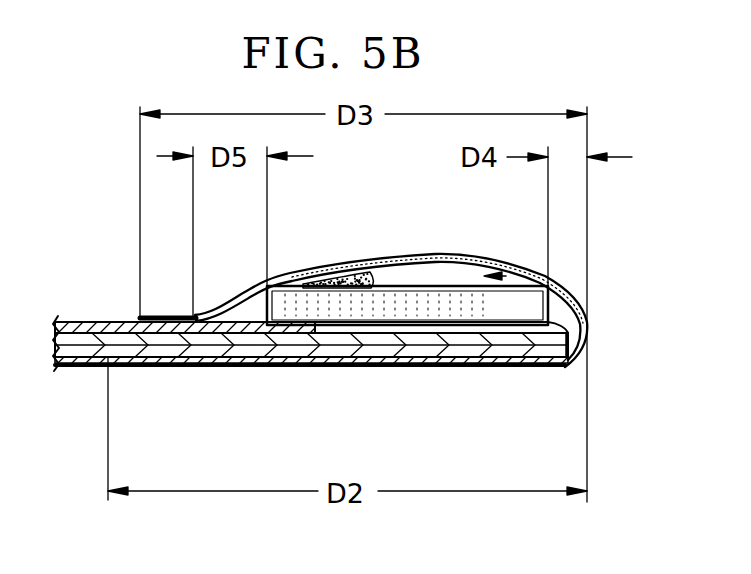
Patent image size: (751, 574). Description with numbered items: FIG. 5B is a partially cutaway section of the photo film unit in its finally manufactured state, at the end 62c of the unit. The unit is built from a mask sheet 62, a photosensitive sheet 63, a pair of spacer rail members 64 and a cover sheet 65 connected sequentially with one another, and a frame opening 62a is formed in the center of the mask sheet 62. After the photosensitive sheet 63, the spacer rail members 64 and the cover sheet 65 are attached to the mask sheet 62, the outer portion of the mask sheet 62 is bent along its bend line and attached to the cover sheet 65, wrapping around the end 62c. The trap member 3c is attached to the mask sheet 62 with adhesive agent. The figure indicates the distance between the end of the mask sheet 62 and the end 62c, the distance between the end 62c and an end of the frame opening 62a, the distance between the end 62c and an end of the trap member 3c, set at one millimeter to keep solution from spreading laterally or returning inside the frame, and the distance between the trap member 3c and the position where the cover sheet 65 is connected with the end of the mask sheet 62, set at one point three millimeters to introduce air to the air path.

The trap member 3c is at (432, 256).
The mask sheet 62 is at (588, 289).
The frame opening 62a is at (107, 362).
The end of the photo film unit 62c is at (517, 339).
The photosensitive sheet 63 is at (422, 353).
The spacer rail members 64 is at (495, 341).
The cover sheet 65 is at (92, 321).